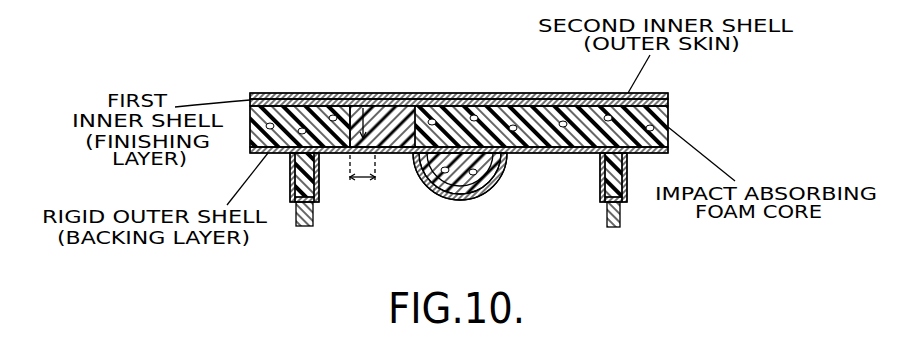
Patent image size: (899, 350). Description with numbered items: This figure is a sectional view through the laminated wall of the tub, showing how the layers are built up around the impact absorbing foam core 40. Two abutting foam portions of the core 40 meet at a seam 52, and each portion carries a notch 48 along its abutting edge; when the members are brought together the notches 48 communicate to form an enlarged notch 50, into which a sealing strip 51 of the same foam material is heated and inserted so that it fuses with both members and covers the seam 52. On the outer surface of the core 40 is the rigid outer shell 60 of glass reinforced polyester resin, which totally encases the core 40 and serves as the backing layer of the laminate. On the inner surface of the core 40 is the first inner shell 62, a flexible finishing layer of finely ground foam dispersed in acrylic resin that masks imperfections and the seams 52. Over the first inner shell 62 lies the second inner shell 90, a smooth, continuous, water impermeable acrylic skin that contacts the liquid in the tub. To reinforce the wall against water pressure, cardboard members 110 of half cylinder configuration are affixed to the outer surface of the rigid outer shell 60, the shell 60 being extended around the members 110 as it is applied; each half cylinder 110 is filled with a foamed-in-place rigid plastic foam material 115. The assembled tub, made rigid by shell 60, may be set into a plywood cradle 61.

The core 40 is at (664, 112).
The notch 48 is at (352, 142).
The enlarged notch 50 is at (362, 177).
The sealing strip 51 is at (350, 153).
The seam 52 is at (372, 120).
The rigid outer shell 60 is at (462, 202).
The plywood cradle 61 is at (303, 227).
The first inner shell 62 is at (346, 105).
The second inner shell 90 is at (466, 93).
The cardboard member 110 is at (478, 190).
The rigid plastic foam material 115 is at (484, 168).